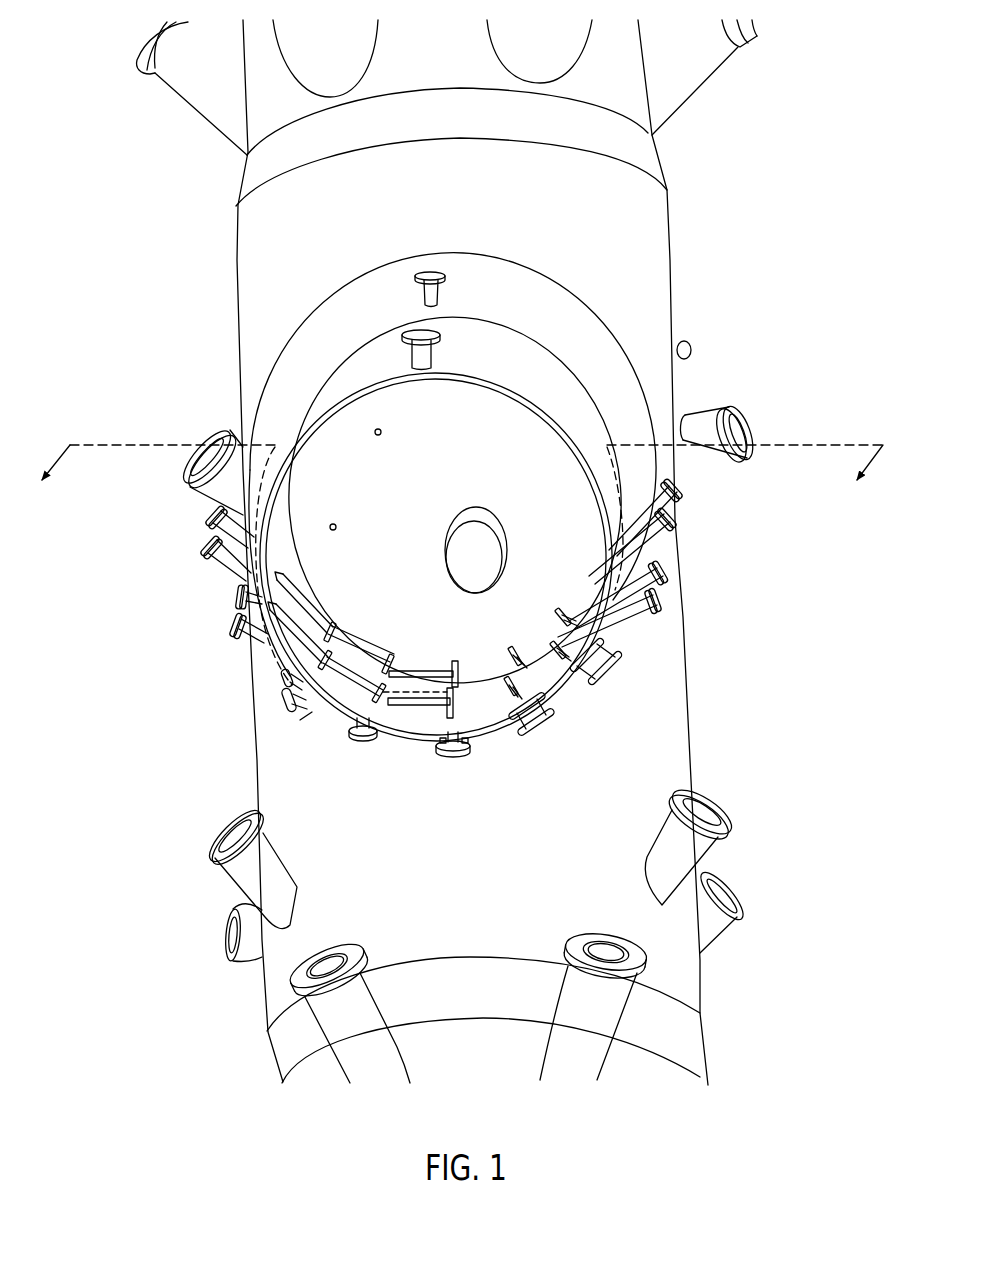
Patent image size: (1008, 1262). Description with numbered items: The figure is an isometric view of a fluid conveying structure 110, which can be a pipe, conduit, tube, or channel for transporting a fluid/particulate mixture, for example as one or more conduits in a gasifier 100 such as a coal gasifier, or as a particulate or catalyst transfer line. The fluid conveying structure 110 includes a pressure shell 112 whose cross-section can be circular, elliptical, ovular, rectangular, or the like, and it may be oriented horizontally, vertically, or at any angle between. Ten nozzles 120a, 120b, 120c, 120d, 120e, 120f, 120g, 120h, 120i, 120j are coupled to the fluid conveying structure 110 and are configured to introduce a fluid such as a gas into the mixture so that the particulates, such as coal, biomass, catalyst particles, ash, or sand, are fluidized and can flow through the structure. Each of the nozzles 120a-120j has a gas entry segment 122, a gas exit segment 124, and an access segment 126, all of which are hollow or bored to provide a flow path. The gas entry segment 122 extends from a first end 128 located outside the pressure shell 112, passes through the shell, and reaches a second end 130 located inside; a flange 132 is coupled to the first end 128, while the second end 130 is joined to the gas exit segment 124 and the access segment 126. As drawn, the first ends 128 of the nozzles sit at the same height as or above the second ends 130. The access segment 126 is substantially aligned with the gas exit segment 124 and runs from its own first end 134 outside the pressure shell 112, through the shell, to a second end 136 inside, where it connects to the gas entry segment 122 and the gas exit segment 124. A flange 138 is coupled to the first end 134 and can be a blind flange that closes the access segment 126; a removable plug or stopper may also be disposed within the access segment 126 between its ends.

The gasifier 100 is at (737, 302).
The fluid conveying structure 110 is at (583, 430).
The pressure shell 112 is at (647, 442).
The nozzle 120a is at (197, 545).
The nozzle 120b is at (227, 628).
The nozzle 120c is at (279, 714).
The nozzle 120d is at (665, 600).
The nozzle 120e is at (680, 517).
The nozzle 120f is at (207, 513).
The nozzle 120g is at (232, 597).
The nozzle 120h is at (353, 632).
The nozzle 120i is at (672, 572).
The nozzle 120j is at (687, 488).
The gas entry segment 122 is at (315, 715).
The gas exit segment 124 is at (458, 712).
The access segment 126 is at (366, 742).
The first end 128 is at (303, 720).
The second end 130 is at (437, 688).
The flange 132 is at (284, 690).
The first end 134 is at (470, 743).
The second end 136 is at (463, 714).
The flange 138 is at (453, 756).